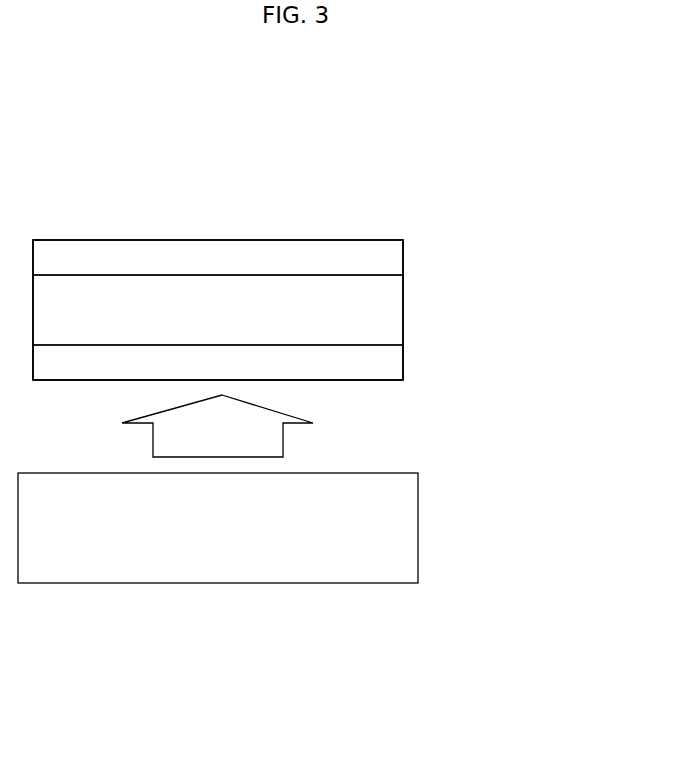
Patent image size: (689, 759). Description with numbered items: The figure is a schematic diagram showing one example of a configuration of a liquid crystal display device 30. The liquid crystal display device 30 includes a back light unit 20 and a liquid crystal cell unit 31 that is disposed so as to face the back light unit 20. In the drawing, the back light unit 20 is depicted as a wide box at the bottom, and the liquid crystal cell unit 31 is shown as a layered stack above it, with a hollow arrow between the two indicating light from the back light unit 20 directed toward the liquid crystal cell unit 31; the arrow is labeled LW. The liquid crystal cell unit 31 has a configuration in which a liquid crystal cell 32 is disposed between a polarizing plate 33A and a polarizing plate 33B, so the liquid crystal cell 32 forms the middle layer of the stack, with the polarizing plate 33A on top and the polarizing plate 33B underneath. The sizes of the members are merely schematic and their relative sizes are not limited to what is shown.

The liquid crystal display device 30 is at (373, 201).
The liquid crystal cell unit 31 is at (518, 235).
The polarizing plate 33A is at (403, 262).
The liquid crystal cell 32 is at (403, 305).
The polarizing plate 33B is at (403, 361).
The back light unit 20 is at (418, 528).
The width dimension LW is at (283, 441).